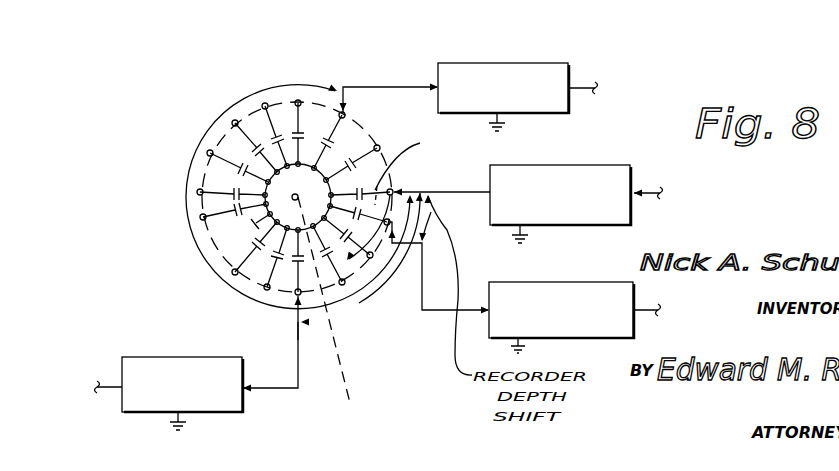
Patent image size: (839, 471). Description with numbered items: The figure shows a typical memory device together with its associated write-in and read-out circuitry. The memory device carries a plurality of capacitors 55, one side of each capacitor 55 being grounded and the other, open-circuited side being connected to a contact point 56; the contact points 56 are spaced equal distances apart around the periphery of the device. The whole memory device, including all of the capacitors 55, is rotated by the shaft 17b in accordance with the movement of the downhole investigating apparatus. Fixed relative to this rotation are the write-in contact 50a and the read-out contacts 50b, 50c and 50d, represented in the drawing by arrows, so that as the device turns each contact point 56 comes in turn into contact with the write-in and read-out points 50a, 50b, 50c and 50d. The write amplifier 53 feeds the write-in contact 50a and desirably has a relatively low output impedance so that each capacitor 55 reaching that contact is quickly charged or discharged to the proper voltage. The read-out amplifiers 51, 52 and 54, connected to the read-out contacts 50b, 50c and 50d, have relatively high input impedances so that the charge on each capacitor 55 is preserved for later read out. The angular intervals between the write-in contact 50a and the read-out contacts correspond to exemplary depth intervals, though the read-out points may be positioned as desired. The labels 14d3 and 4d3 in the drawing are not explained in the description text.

The capacitive commutator rotor segment assembly 14d3 is at (200, 215).
The rotor drive shaft signal path 4d3 is at (302, 322).
The shaft 17b is at (350, 403).
The write-in contact 50a is at (394, 189).
The read-out contact 50b is at (296, 301).
The read-out contact 50c is at (348, 115).
The read-out contact 50d is at (394, 220).
The read-out amplifier 51 is at (203, 413).
The read-out amplifier 52 is at (550, 282).
The write amplifier 53 is at (560, 165).
The read-out amplifier 54 is at (503, 63).
The capacitor 55 is at (391, 199).
The contact point 56 is at (197, 263).